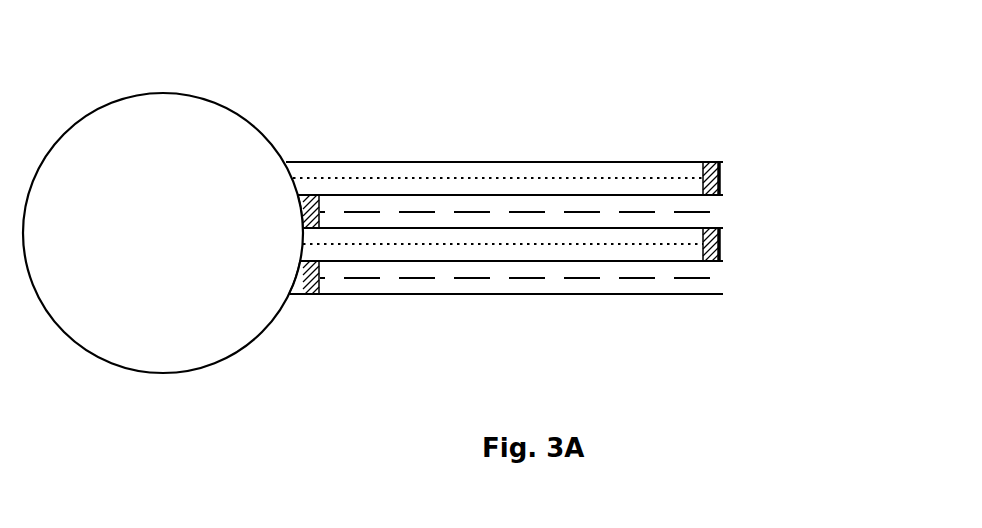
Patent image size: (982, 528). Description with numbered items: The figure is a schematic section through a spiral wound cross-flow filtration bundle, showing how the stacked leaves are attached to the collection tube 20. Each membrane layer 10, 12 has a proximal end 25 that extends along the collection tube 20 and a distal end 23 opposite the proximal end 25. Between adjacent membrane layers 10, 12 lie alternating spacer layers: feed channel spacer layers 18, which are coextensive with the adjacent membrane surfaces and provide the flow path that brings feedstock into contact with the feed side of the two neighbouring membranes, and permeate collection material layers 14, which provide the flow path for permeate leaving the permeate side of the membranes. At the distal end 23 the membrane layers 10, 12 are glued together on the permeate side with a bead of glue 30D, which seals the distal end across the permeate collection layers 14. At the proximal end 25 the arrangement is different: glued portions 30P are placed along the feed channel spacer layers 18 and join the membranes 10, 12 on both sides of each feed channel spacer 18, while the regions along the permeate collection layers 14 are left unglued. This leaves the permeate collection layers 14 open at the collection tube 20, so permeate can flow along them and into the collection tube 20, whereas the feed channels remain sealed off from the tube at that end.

The membrane layer 10 is at (440, 227).
The membrane layer 12 is at (592, 194).
The permeate collection material layer 14 is at (553, 178).
The feed channel spacer layer 18 is at (400, 210).
The collection tube 20 is at (203, 95).
The distal end 23 is at (719, 170).
The proximal end 25 is at (288, 162).
The glued portion 30P is at (323, 195).
The bead of glue 30D is at (719, 178).